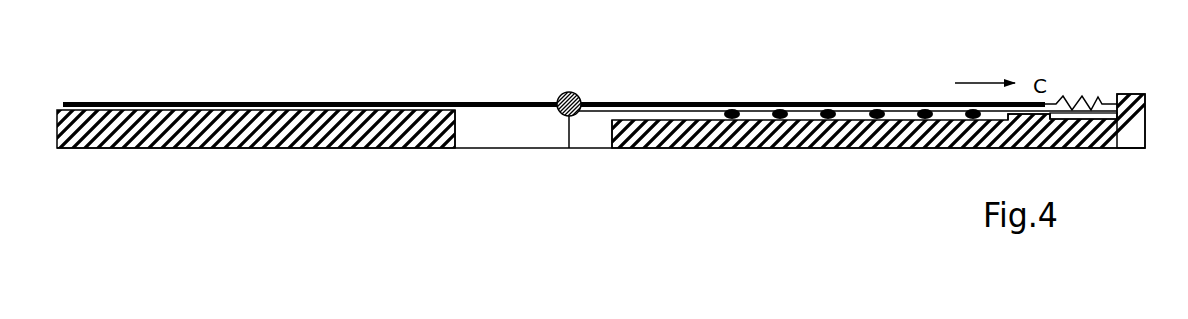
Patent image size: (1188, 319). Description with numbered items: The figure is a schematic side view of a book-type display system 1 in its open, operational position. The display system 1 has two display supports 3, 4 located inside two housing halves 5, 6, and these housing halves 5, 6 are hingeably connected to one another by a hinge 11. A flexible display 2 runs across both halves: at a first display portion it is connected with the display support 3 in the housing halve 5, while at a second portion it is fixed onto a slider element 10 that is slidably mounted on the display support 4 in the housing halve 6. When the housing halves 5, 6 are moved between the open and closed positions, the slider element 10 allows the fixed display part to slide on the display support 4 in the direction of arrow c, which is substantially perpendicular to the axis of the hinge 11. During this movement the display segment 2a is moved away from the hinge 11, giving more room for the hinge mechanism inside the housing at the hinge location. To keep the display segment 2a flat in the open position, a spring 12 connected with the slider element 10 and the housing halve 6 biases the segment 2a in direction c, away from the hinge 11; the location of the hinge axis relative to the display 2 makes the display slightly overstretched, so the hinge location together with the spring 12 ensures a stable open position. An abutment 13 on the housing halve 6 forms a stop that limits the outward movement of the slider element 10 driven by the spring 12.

The display system 1 is at (805, 172).
The display 2 is at (307, 102).
The display segment 2a is at (605, 102).
The display support 3 is at (207, 148).
The display support 4 is at (670, 148).
The housing halve 5 is at (451, 153).
The housing halve 6 is at (1069, 149).
The slider element 10 is at (787, 102).
The hinge 11 is at (569, 92).
The spring 12 is at (1085, 97).
The abutment 13 is at (1006, 124).